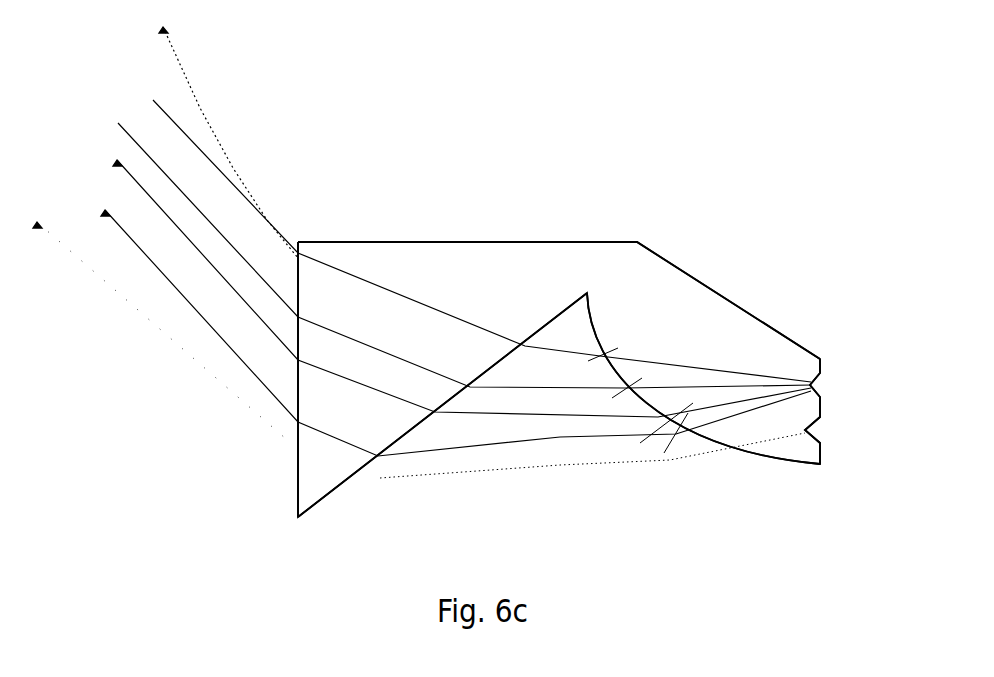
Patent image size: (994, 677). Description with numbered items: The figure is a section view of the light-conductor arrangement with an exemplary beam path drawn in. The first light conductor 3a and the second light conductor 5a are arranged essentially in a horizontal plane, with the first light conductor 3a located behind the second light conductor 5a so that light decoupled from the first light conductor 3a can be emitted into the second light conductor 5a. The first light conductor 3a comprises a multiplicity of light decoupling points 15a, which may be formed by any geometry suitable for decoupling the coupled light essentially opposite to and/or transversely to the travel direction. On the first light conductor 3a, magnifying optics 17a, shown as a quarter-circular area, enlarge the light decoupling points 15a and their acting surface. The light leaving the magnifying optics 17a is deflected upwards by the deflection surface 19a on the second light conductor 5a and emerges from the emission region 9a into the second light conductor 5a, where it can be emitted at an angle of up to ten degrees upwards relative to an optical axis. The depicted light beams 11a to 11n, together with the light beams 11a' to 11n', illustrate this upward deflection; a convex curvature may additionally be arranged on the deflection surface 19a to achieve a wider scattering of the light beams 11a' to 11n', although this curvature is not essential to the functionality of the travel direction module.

The first light conductor 3a is at (718, 308).
The second light conductor 5a is at (395, 272).
The emission region 9a is at (313, 500).
The light beam 11a is at (482, 241).
The light beam 11a' is at (235, 142).
The light beam 11n is at (456, 333).
The light beam 11n' is at (163, 333).
The light decoupling points 15a is at (825, 397).
The magnifying optics 17a is at (770, 450).
The deflection surface 19a is at (330, 462).